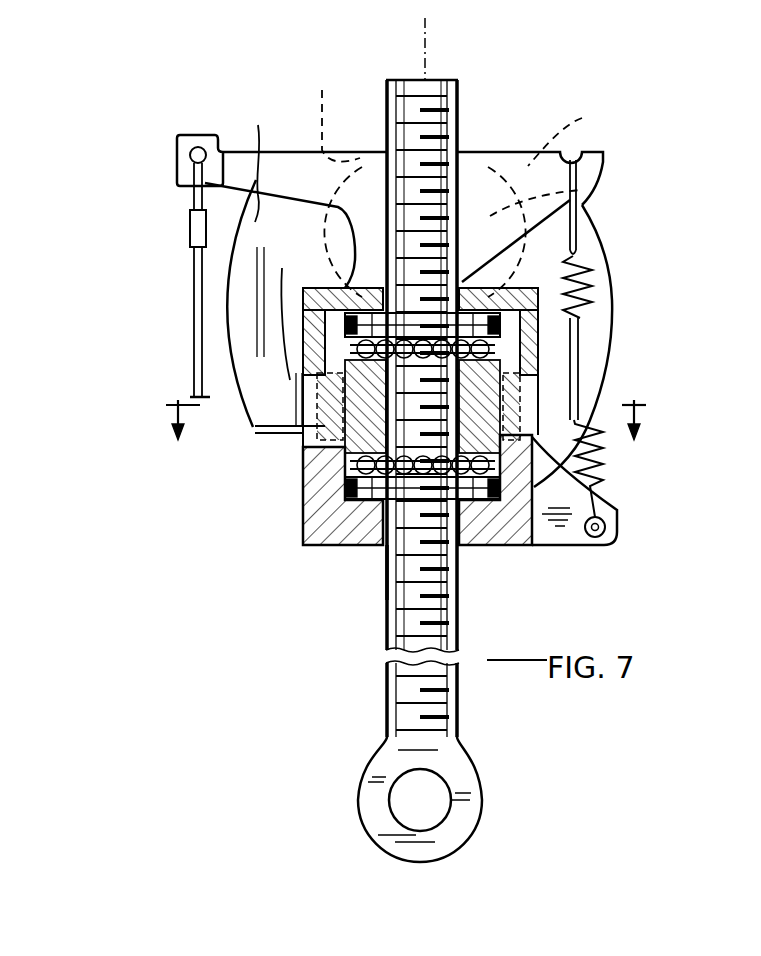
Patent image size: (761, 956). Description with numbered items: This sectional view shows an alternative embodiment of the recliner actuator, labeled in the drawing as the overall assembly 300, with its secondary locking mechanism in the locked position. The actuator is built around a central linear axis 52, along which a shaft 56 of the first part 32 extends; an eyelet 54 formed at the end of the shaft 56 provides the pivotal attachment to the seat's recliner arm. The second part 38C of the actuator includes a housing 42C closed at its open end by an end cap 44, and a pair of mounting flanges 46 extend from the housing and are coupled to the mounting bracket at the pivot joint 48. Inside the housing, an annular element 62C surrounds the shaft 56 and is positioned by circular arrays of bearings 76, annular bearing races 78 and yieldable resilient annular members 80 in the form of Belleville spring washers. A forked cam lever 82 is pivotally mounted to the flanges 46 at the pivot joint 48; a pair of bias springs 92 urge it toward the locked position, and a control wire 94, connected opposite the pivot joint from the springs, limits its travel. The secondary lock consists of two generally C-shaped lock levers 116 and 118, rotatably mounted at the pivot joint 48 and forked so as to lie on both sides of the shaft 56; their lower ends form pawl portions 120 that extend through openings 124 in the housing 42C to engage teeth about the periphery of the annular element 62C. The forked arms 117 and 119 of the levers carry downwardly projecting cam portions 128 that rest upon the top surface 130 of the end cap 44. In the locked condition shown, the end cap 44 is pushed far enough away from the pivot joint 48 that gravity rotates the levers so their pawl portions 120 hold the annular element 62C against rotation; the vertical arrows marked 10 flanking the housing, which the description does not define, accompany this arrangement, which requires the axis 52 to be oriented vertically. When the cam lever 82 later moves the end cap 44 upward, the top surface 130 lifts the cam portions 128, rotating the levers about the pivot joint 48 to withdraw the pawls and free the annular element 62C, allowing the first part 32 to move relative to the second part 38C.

The direction arrow 10 is at (411, 442).
The first part 32 is at (470, 582).
The second part 38C is at (290, 505).
The housing 42C is at (545, 548).
The end cap 44 is at (596, 258).
The mounting flanges 46 is at (560, 196).
The pivot joint 48 is at (386, 110).
The central linear axis 52 is at (427, 38).
The eyelet 54 is at (482, 795).
The shaft 56 is at (382, 588).
The annular element 62C is at (560, 392).
The bearings 76 is at (582, 330).
The annular bearing race 78 is at (555, 318).
The yieldable resilient annular member 80 is at (372, 305).
The cam lever 82 is at (487, 145).
The bias springs 92 is at (618, 480).
The control wire 94 is at (190, 342).
The lock lever 116 is at (261, 157).
The forked arm 117 is at (340, 111).
The lock lever 118 is at (580, 248).
The forked arm 119 is at (586, 133).
The pawl portions 120 is at (262, 427).
The openings 124 is at (318, 372).
The cam portion 128 is at (588, 258).
The top surface 130 is at (404, 266).
The assembly 300 is at (628, 291).